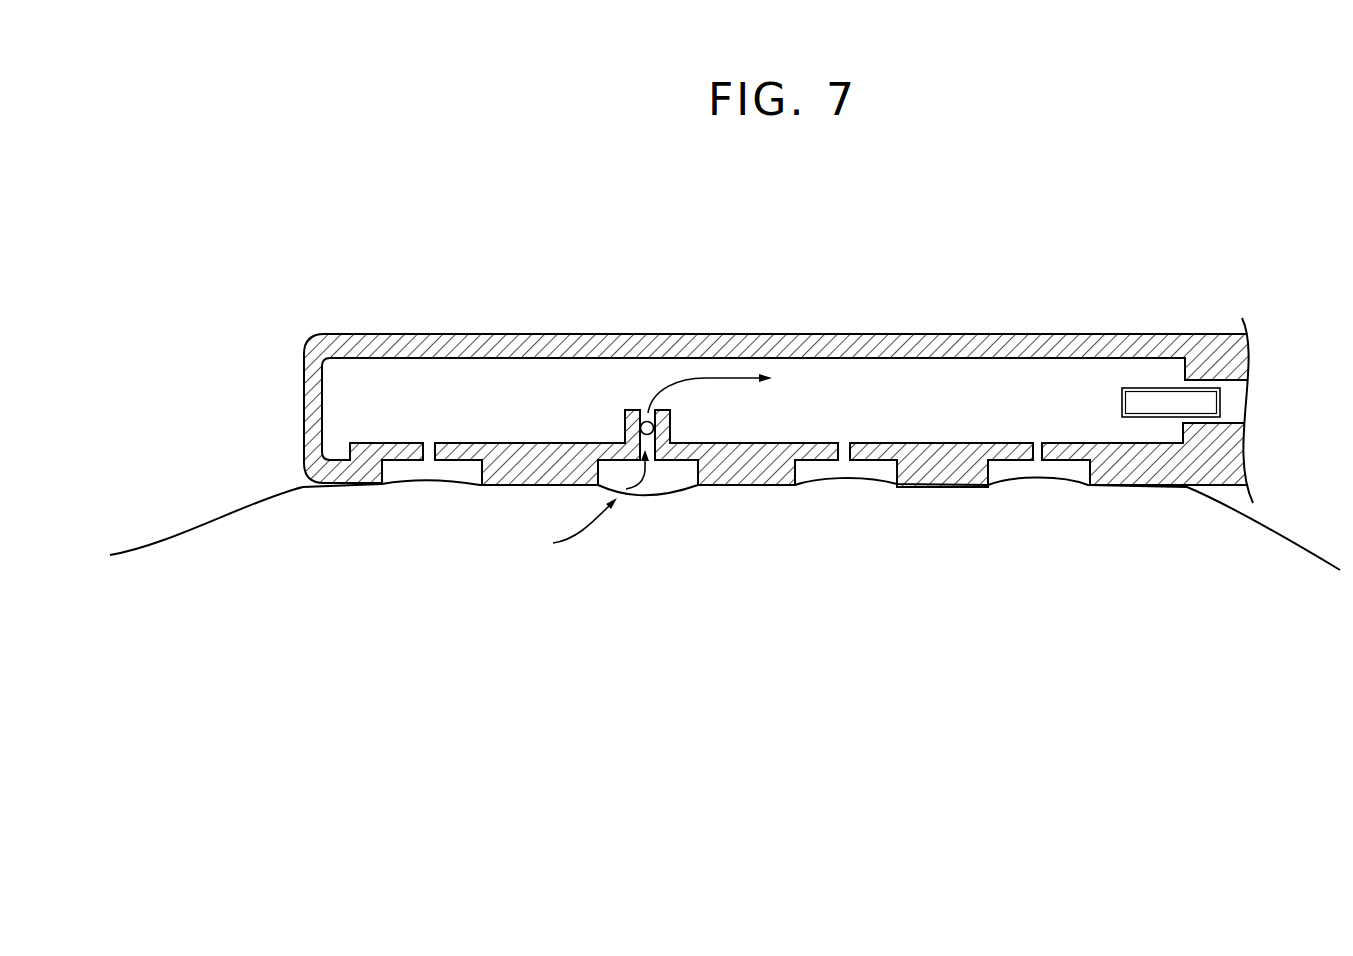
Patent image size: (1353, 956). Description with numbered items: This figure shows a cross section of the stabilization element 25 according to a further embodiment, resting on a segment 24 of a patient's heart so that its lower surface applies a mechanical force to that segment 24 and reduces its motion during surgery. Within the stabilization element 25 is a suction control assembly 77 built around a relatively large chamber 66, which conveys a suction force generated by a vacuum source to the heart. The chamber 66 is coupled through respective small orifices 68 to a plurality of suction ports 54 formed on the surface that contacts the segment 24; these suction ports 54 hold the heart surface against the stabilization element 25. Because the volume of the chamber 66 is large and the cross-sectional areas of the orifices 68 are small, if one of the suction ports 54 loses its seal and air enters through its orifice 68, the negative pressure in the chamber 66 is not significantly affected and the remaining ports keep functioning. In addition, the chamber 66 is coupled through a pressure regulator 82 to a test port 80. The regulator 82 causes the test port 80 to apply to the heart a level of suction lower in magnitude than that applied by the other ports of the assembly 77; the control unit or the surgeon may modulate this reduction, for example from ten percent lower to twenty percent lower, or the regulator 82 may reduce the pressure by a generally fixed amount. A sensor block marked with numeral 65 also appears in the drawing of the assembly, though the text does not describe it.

The stabilization element 25 is at (822, 335).
The suction control assembly 77 is at (420, 386).
The test port 80 is at (598, 467).
The pressure regulator 82 is at (636, 426).
The chamber 66 is at (838, 401).
The suction ports 54 is at (993, 446).
The orifices 68 is at (1034, 443).
The sensor 65 is at (1122, 397).
The segment 24 is at (860, 583).